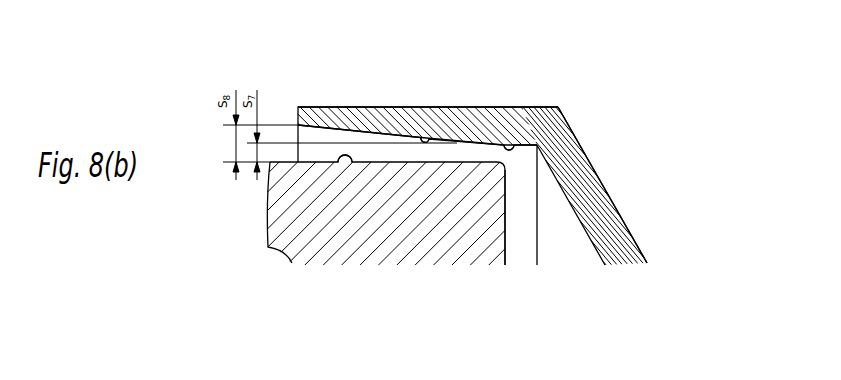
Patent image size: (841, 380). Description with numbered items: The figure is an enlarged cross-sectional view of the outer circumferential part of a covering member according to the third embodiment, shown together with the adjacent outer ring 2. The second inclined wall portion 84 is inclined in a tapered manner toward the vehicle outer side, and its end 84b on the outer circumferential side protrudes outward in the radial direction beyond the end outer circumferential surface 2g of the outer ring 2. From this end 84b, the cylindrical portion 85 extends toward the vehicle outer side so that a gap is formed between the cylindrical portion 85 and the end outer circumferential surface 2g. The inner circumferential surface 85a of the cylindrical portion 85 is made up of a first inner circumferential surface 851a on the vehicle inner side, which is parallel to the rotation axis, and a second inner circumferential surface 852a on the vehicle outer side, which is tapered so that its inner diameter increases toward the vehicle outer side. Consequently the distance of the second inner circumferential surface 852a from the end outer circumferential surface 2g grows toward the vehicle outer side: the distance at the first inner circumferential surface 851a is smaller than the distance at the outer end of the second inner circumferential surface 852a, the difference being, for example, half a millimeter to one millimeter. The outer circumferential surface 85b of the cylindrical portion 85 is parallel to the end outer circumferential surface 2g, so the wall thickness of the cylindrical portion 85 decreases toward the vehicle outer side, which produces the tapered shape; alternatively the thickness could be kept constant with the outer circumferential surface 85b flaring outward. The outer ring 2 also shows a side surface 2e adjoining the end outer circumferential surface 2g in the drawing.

The cylindrical portion 85 is at (356, 117).
The outer circumferential surface 85b is at (389, 107).
The inner circumferential surface 85a is at (555, 62).
The second inner circumferential surface 852a is at (431, 140).
The first inner circumferential surface 851a is at (512, 148).
The second inclined wall portion 84 is at (578, 175).
The end on the outer circumferential side of the second inclined wall portion 84b is at (548, 127).
The outer ring 2 is at (380, 227).
The side surface of frame 2e is at (506, 248).
The end outer circumferential surface 2g is at (340, 164).